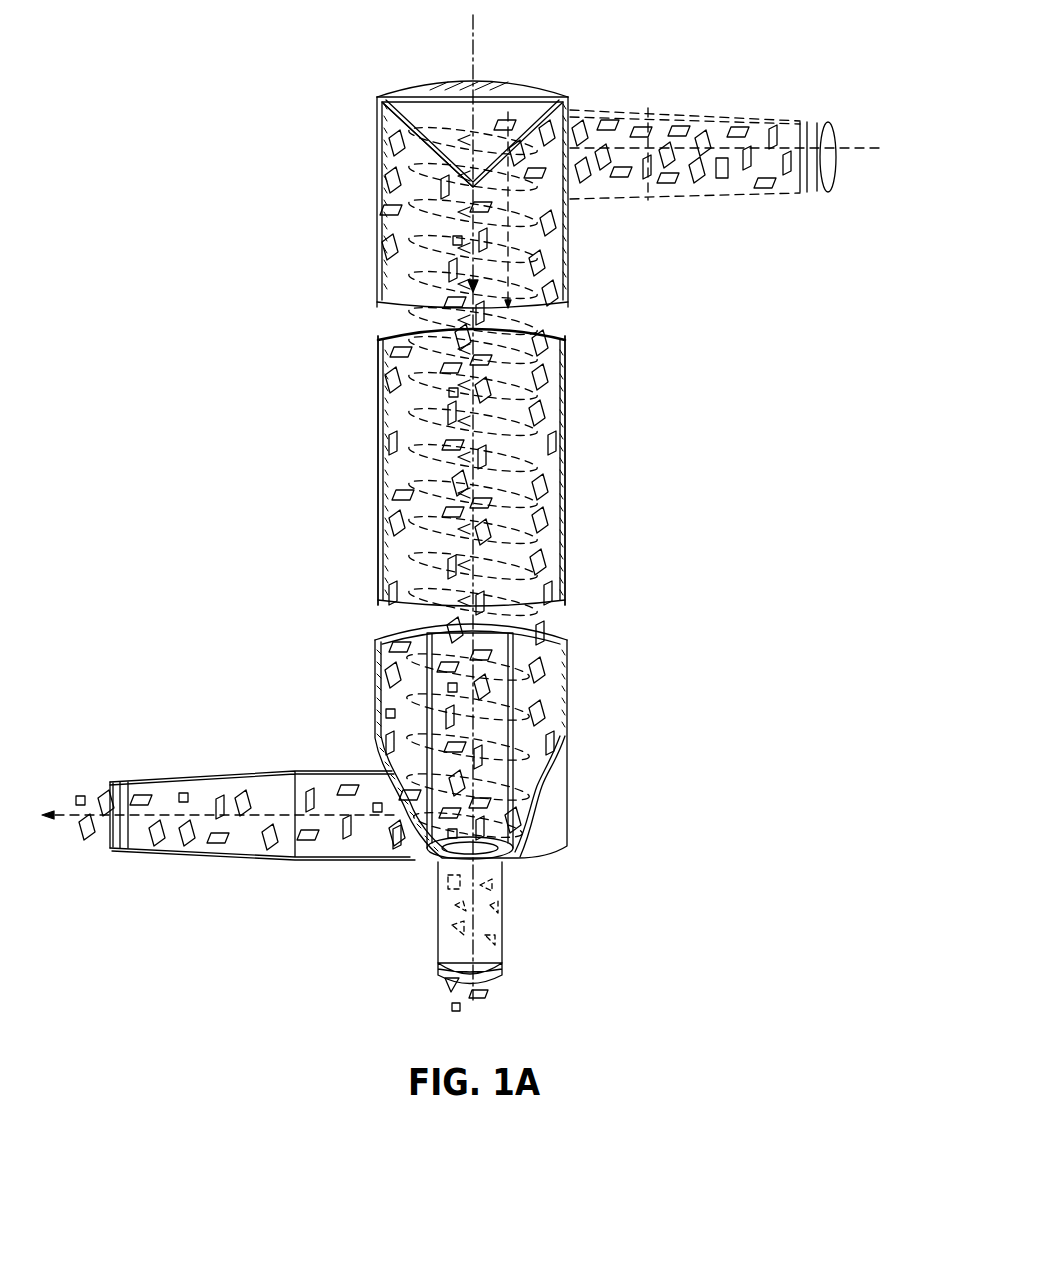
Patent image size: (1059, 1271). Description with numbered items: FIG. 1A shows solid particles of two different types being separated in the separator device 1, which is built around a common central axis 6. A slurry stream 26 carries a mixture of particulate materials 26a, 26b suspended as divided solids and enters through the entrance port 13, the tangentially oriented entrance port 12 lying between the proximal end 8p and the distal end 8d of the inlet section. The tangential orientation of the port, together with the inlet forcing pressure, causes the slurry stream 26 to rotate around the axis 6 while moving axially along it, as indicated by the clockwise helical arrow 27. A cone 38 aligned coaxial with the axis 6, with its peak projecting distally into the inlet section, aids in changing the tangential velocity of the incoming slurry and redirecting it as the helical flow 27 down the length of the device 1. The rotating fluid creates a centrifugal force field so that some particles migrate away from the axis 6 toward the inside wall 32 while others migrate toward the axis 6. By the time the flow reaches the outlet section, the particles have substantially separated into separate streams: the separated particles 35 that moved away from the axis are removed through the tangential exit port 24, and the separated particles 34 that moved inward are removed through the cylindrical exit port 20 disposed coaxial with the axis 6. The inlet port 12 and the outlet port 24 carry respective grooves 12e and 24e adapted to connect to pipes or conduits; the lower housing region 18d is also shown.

The axis 6 is at (477, 47).
The proximal end 8p is at (377, 97).
The entrance port 13 is at (545, 97).
The cone 38 is at (398, 122).
The entrance port 12 is at (628, 108).
The groove 12e is at (819, 192).
The slurry stream 26 is at (739, 151).
The particulate material 26a is at (683, 120).
The particulate material 26b is at (728, 186).
The helical arrow 27 is at (535, 322).
The distal end 8d is at (426, 472).
The separator device 1 is at (380, 336).
The inside wall 32 is at (567, 458).
The lower housing with funnel 18d is at (549, 865).
The tangential exit port 24 is at (212, 780).
The groove 24e is at (122, 850).
The separated particles 35 is at (108, 800).
The cylindrical exit port 20 is at (438, 930).
The separated particles 34 is at (490, 995).